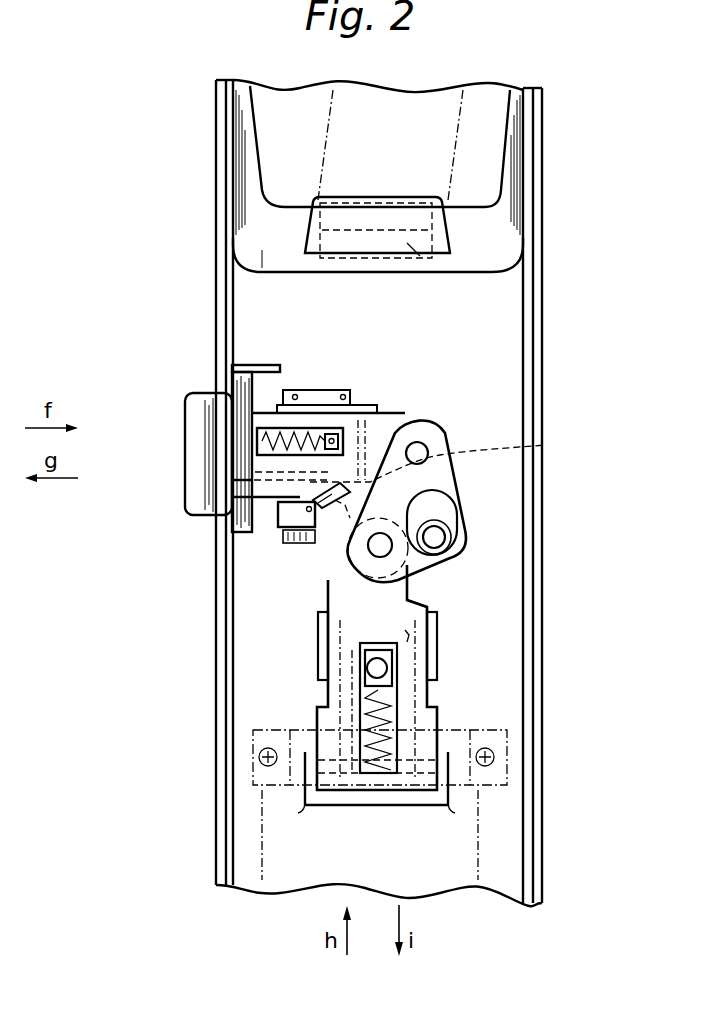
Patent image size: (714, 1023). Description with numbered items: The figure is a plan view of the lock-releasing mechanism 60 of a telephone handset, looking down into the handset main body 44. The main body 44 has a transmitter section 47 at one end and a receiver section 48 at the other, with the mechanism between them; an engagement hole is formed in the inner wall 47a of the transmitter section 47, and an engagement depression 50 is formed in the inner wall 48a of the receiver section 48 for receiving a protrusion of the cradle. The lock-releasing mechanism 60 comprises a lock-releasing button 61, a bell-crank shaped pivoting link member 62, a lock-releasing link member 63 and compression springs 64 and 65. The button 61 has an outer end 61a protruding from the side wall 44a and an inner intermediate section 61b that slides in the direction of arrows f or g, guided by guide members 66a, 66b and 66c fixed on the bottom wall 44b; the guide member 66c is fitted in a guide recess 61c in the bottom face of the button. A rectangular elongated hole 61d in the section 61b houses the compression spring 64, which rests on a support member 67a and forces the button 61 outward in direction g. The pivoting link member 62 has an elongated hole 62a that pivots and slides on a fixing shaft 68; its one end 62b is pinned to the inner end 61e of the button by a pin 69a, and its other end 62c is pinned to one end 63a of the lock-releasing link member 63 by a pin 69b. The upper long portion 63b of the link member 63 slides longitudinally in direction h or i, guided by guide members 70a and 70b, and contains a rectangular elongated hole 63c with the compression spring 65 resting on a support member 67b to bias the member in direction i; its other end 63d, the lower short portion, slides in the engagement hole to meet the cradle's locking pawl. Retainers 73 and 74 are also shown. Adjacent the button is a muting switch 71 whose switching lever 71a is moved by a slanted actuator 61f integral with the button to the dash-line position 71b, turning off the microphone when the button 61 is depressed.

The main body 44 is at (213, 162).
The side wall 44a is at (225, 273).
The bottom wall 44b is at (248, 318).
The transmitter section 47 is at (497, 875).
The inner wall 47a is at (473, 802).
The receiver section 48 is at (485, 125).
The inner wall 48a is at (478, 236).
The engagement depression 50 is at (420, 256).
The lock-releasing mechanism 60 is at (512, 585).
The lock-releasing button 61 is at (284, 449).
The outer end 61a is at (196, 447).
The inner intermediate section 61b is at (370, 404).
The guide recess 61c is at (232, 491).
The rectangular elongated hole 61d is at (262, 428).
The inner end 61e is at (545, 446).
The actuator 61f is at (282, 532).
The pivoting link member 62 is at (462, 511).
The elongated hole 62a is at (447, 503).
The one end 62b is at (440, 452).
The other end 62c is at (405, 630).
The lock-releasing link member 63 is at (310, 697).
The one end 63a is at (442, 593).
The upper long portion 63b is at (325, 633).
The rectangular elongated hole 63c is at (398, 700).
The other end 63d is at (427, 757).
The compression spring 64 is at (300, 440).
The compression spring 65 is at (382, 712).
The guide member 66a is at (262, 362).
The guide member 66b is at (378, 404).
The guide member 66c is at (282, 530).
The support member 67a is at (333, 432).
The support member 67b is at (393, 660).
The fixing shaft 68 is at (451, 538).
The pin 69a is at (417, 450).
The pin 69b is at (373, 556).
The guide member 70a is at (320, 664).
The guide member 70b is at (438, 628).
The muting switch 71 is at (318, 512).
The switching lever 71a is at (338, 487).
The dash-line position 71b is at (345, 520).
The retainer 73 is at (294, 394).
The retainer 74 is at (505, 772).